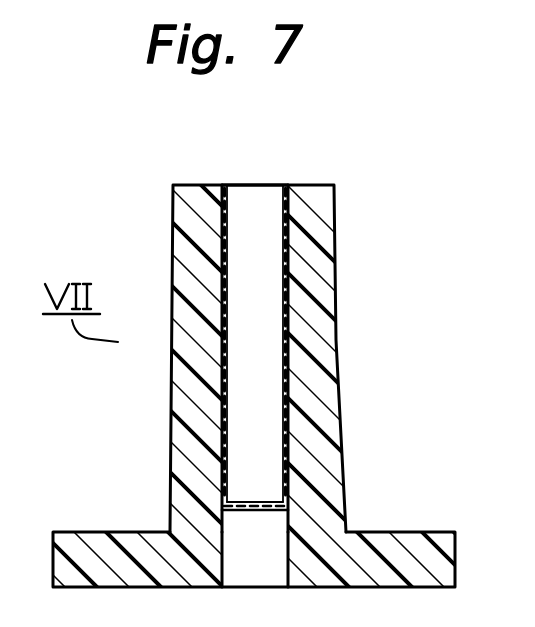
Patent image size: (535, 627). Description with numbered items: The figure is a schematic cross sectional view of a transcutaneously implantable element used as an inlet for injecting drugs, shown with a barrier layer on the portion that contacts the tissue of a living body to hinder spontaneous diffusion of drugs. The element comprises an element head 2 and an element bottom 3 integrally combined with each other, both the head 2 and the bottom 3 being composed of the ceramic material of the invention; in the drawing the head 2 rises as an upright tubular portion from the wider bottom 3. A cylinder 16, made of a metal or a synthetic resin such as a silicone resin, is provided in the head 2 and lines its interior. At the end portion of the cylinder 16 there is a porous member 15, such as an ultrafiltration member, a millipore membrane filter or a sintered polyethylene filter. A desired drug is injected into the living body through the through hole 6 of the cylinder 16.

The element head 2 is at (323, 231).
The element bottom 3 is at (428, 548).
The through hole 6 is at (245, 208).
The porous member 15 is at (292, 505).
The cylinder 16 is at (289, 433).